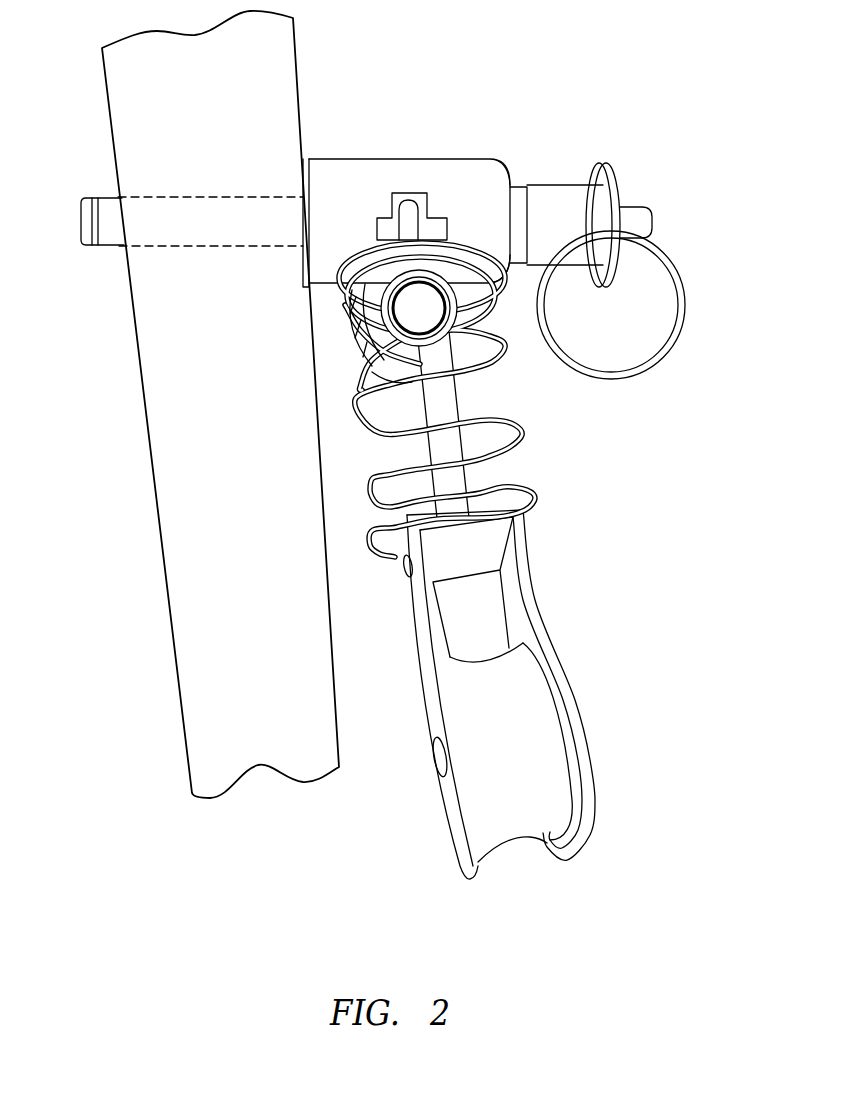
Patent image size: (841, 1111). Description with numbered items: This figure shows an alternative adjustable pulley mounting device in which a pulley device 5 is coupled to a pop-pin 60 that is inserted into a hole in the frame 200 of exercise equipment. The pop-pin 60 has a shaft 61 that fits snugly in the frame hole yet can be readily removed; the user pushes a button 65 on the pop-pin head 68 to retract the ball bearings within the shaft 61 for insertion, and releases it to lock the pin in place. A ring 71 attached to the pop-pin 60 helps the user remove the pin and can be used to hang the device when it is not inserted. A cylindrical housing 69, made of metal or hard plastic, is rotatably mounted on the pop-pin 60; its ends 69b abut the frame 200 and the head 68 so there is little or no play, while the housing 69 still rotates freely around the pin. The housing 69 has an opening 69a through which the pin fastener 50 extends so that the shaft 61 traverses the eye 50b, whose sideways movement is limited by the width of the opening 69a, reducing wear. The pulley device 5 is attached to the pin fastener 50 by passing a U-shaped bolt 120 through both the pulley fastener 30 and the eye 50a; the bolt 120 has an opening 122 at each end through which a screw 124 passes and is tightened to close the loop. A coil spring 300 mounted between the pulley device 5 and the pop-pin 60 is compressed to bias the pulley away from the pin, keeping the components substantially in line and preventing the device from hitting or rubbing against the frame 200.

The pulley device 5 is at (506, 561).
The pulley fastener 30 is at (527, 468).
The pin fastener 50 is at (360, 337).
The eye 50a is at (460, 318).
The eye 50b is at (408, 207).
The pop-pin 60 is at (488, 135).
The shaft 61 is at (85, 215).
The button 65 is at (637, 225).
The pop-pin head 68 is at (613, 182).
The housing 69 is at (344, 168).
The opening 69a is at (425, 213).
The ends 69b is at (302, 180).
The ring 71 is at (680, 327).
The U-shaped bolt 120 is at (458, 400).
The opening 122 is at (372, 372).
The screw 124 is at (410, 303).
The frame 200 is at (170, 440).
The coil spring 300 is at (527, 424).